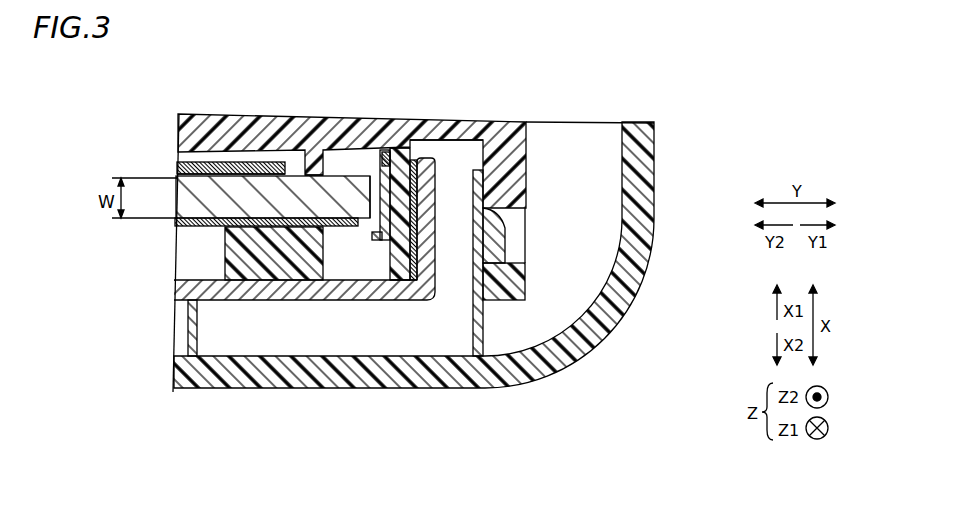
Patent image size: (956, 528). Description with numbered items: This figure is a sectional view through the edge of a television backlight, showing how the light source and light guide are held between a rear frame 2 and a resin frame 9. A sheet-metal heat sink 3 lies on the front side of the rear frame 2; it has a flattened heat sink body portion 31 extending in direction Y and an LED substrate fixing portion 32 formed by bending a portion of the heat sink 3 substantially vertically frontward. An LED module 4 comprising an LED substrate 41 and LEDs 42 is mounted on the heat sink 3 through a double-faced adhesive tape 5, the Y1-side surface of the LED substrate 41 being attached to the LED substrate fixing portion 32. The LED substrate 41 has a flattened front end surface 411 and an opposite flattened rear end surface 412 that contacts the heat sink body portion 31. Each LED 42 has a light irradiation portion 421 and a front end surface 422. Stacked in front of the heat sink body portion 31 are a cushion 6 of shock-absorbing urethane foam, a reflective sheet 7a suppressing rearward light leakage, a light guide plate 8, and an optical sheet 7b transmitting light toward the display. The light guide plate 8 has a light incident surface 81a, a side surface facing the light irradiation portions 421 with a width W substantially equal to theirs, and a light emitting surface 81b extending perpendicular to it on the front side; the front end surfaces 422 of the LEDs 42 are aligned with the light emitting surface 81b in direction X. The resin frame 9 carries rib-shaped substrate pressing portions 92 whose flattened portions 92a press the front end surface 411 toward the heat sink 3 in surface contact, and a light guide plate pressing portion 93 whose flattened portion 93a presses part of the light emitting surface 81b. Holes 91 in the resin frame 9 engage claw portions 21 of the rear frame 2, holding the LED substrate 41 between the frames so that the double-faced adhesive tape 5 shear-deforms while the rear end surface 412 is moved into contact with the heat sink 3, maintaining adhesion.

The rear frame 2 is at (414, 271).
The claw portion 21 is at (503, 223).
The heat sink 3 is at (320, 253).
The heat sink body portion 31 is at (275, 295).
The LED substrate fixing portion 32 is at (429, 240).
The LED module 4 is at (367, 185).
The LED substrate 41 is at (371, 185).
The front end surface 411 is at (400, 148).
The rear end surface 412 is at (400, 282).
The LED 42 is at (357, 148).
The light irradiation portion 421 is at (373, 227).
The front end surface of LED 422 is at (390, 150).
The double-faced adhesive tape 5 is at (413, 207).
The cushion 6 is at (317, 267).
The reflective sheet 7a is at (177, 222).
The optical sheet 7b is at (178, 166).
The light guide plate 8 is at (178, 200).
The light incident surface 81a is at (373, 210).
The light emitting surface 81b is at (178, 170).
The resin frame 9 is at (384, 196).
The hole 91 is at (522, 208).
The substrate pressing portion 92 is at (407, 140).
The pressing portion of substrate pressing portion 92a is at (452, 140).
The light guide plate pressing portion 93 is at (318, 178).
The pressing portion of light guide plate pressing portion 93a is at (292, 177).